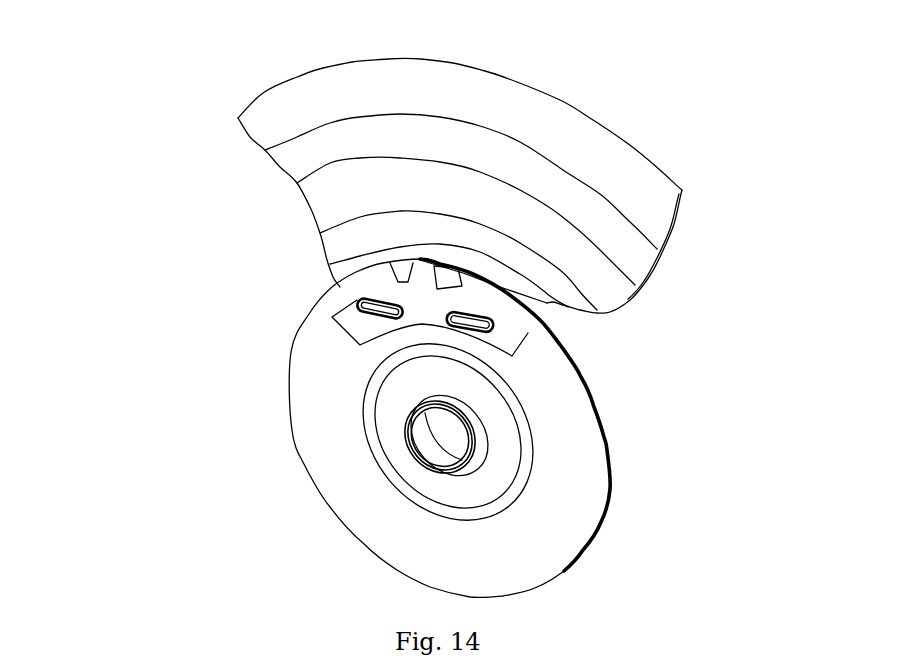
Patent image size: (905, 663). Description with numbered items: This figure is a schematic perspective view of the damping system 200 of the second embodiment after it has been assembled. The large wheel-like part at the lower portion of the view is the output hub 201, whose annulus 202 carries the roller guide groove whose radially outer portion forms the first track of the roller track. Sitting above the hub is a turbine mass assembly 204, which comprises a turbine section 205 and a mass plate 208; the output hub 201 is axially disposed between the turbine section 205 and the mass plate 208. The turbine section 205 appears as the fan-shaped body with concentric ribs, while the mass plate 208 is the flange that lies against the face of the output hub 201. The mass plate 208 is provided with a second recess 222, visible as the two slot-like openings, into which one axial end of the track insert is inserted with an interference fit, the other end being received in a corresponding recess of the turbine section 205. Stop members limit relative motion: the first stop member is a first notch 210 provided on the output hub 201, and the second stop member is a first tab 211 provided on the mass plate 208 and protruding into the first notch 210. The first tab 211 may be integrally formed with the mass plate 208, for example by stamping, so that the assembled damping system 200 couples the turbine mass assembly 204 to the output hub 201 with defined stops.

The damping system 200 is at (127, 120).
The output hub 201 is at (480, 425).
The annulus 202 is at (560, 457).
The turbine mass assembly 204 is at (772, 271).
The turbine section 205 is at (587, 288).
The mass plate 208 is at (508, 342).
The first notch 210 is at (392, 265).
The first tab 211 is at (424, 283).
The second recess 222 is at (463, 322).